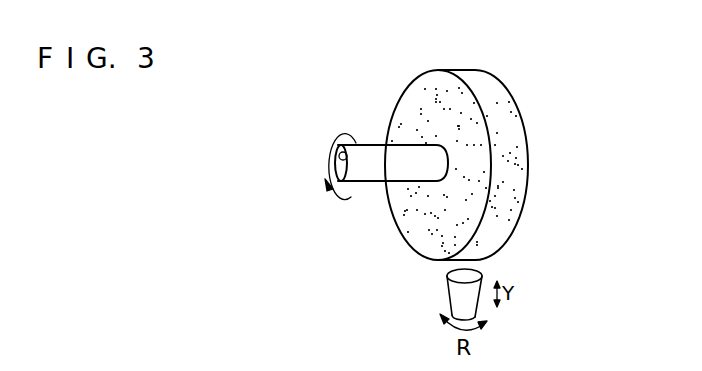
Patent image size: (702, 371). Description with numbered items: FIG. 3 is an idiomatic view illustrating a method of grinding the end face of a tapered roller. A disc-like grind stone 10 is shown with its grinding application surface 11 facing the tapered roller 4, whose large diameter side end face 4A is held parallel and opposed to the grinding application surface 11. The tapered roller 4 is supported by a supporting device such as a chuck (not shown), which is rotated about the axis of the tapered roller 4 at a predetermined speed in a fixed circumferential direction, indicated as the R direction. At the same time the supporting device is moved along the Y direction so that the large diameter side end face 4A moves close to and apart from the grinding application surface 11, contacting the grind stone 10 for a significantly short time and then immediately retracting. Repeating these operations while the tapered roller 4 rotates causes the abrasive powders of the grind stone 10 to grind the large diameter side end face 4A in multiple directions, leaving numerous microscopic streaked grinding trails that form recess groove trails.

The grind stone 10 is at (400, 108).
The grinding application surface 11 is at (477, 250).
The tapered roller 4 is at (457, 299).
The large diameter side end face 4A is at (456, 279).